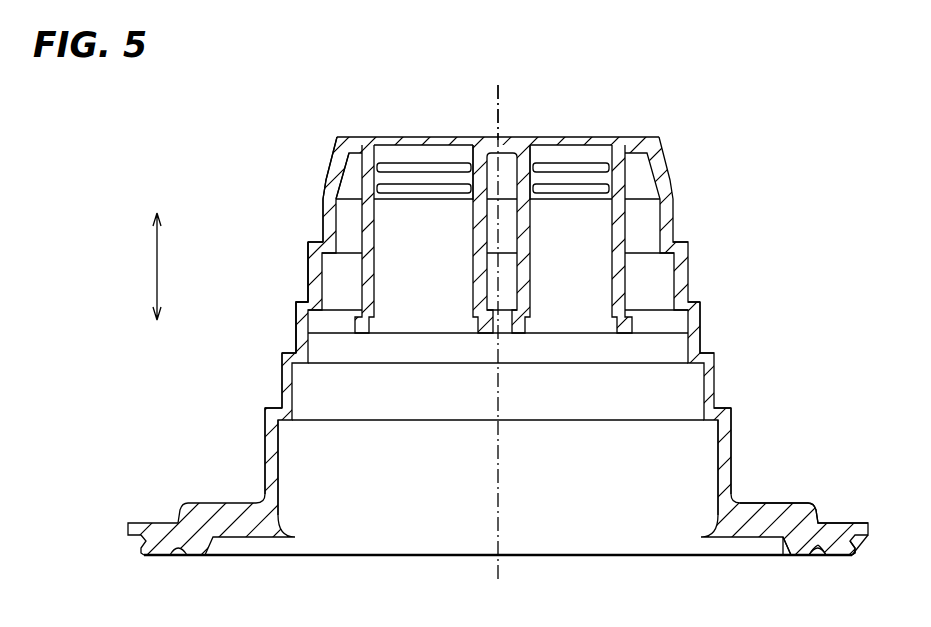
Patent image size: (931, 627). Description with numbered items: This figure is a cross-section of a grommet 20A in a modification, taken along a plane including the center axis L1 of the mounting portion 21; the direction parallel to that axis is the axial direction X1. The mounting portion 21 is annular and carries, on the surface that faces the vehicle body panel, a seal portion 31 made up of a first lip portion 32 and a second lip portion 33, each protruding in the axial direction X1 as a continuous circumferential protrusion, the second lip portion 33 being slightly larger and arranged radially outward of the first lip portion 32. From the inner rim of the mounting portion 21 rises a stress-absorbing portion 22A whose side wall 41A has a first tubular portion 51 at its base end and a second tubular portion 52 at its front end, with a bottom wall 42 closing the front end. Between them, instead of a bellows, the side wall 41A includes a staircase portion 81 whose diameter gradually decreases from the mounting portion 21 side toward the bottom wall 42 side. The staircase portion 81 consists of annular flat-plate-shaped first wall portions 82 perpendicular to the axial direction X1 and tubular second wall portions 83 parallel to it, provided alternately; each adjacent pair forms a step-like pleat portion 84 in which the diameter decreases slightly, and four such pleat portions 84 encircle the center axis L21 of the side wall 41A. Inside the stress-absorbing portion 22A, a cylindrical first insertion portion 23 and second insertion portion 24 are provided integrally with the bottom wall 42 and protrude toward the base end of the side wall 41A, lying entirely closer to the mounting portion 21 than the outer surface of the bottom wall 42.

The grommet 20A is at (730, 133).
The mounting portion 21 is at (793, 508).
The stress-absorbing portion 22A is at (732, 447).
The first insertion portion 23 is at (361, 237).
The second insertion portion 24 is at (621, 237).
The seal portion 31 is at (865, 594).
The first lip portion 32 is at (787, 553).
The second lip portion 33 is at (847, 553).
The side wall 41A is at (702, 320).
The bottom wall 42 is at (503, 137).
The first tubular portion 51 is at (270, 455).
The second tubular portion 52 is at (333, 176).
The staircase portion 81 is at (296, 297).
The first wall portion 82 is at (312, 242).
The second wall portion 83 is at (326, 222).
The pleat portion 84 is at (676, 243).
The center axis L1 is at (500, 464).
The center axis L21 is at (500, 88).
The axial direction X1 is at (157, 266).